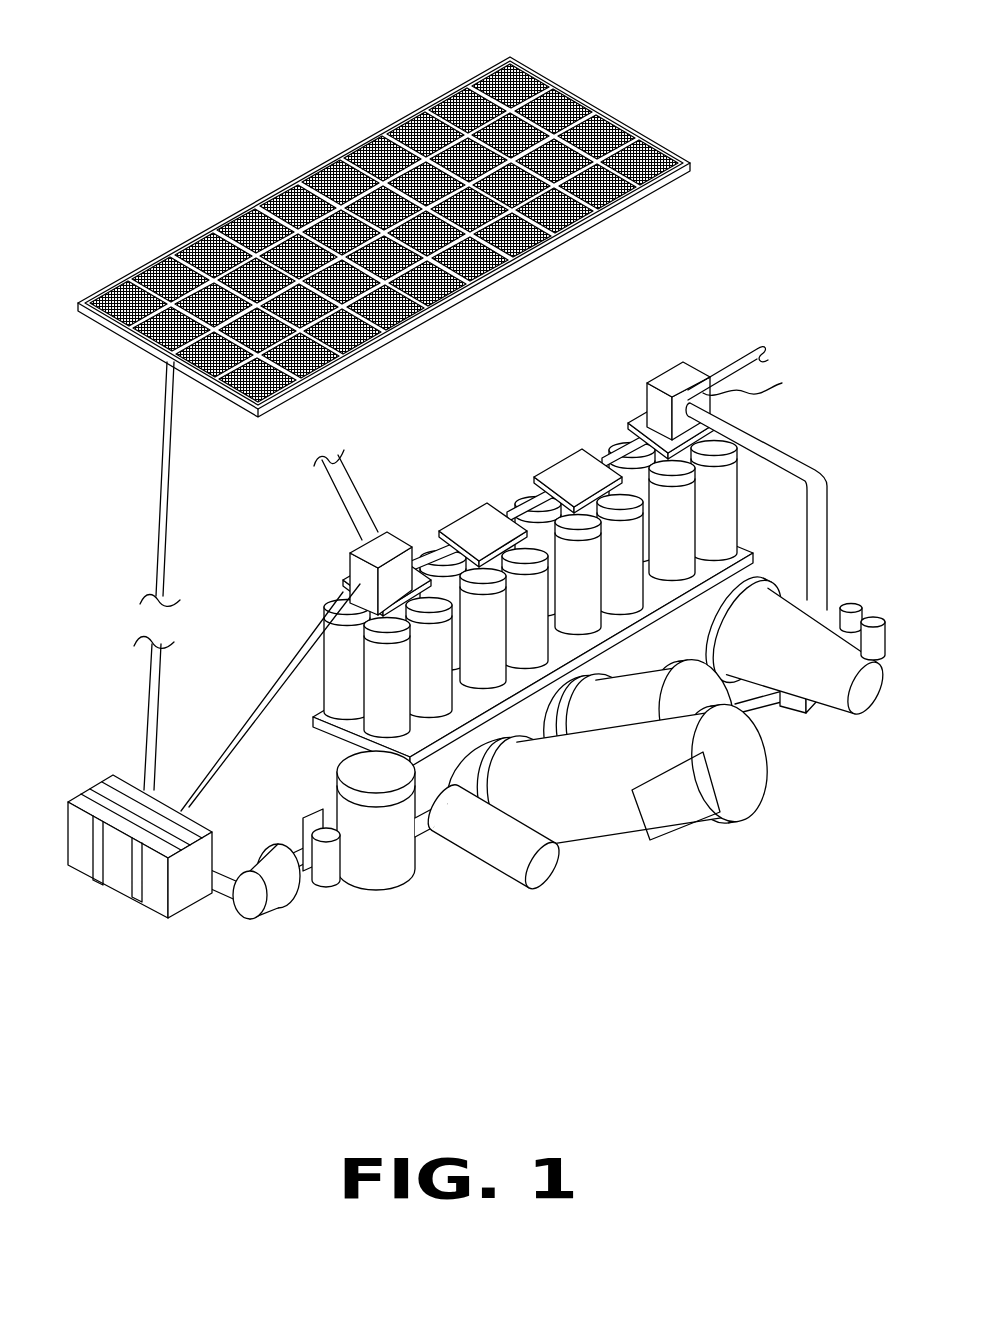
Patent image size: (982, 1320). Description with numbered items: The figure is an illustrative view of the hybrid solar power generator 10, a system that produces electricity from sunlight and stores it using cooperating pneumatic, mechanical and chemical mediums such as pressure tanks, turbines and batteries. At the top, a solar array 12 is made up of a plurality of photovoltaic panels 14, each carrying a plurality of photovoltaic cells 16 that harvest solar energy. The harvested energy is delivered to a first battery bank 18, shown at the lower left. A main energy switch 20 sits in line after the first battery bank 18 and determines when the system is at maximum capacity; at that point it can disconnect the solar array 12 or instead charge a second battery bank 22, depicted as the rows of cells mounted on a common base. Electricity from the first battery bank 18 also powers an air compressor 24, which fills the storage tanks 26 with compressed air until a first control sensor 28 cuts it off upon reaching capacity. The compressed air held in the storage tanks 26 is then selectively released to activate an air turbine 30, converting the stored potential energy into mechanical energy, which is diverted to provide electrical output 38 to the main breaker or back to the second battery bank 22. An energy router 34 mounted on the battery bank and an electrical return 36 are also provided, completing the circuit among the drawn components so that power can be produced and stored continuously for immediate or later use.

The hybrid solar power generator 10 is at (759, 138).
The solar array 12 is at (290, 185).
The photovoltaic panel 14 is at (452, 122).
The photovoltaic cell 16 is at (396, 145).
The first battery bank 18 is at (117, 877).
The main energy switch 20 is at (272, 903).
The second battery bank 22 is at (667, 510).
The air compressor 24 is at (360, 875).
The storage tank 26 is at (540, 777).
The first control sensor 28 is at (533, 843).
The air turbine 30 is at (828, 700).
The energy router 34 is at (355, 563).
The electrical return 36 is at (350, 504).
The electrical output 38 is at (734, 376).